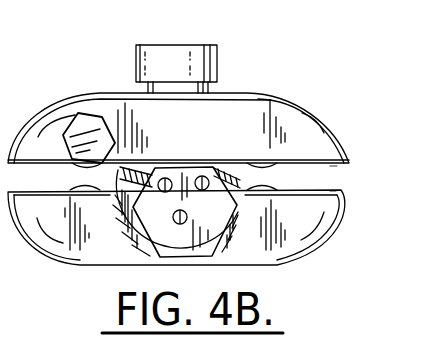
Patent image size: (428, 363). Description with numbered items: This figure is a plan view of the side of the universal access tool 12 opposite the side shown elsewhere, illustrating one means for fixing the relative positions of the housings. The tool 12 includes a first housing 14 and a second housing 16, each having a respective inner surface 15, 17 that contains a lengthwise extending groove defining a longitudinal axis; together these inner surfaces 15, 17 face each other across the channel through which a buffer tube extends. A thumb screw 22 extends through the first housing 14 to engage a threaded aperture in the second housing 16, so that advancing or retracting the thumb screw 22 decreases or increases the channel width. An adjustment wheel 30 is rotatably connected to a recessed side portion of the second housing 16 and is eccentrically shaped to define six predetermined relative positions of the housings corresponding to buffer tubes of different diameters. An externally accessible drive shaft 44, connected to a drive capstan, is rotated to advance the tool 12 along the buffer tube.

The universal access tool 12 is at (291, 78).
The first housing 14 is at (323, 138).
The inner surface 15 is at (337, 165).
The second housing 16 is at (327, 210).
The inner surface 17 is at (336, 192).
The thumb screw 22 is at (203, 55).
The adjustment wheel 30 is at (213, 227).
The drive shaft 44 is at (92, 123).